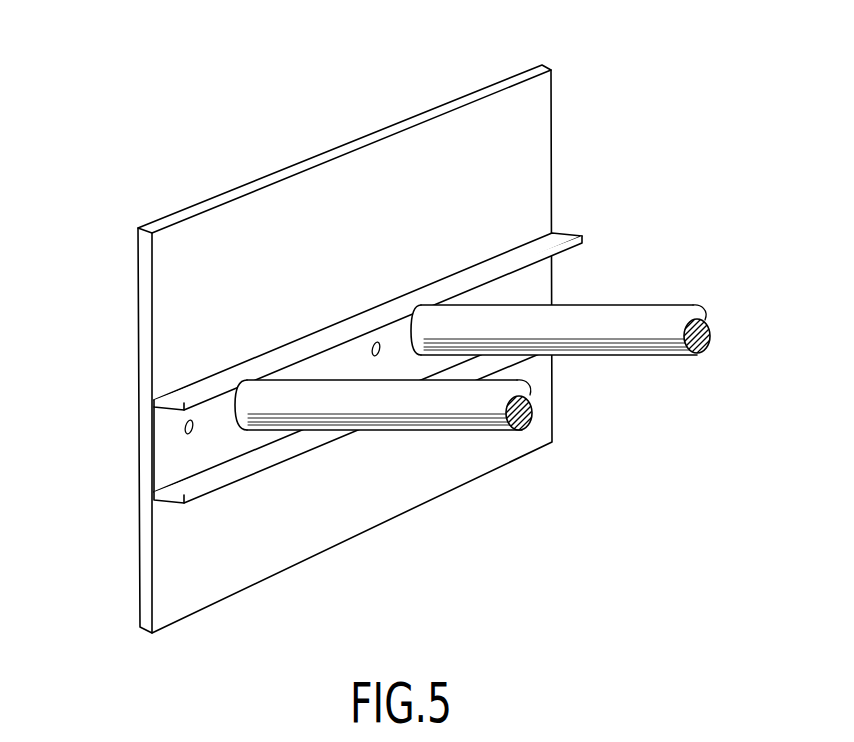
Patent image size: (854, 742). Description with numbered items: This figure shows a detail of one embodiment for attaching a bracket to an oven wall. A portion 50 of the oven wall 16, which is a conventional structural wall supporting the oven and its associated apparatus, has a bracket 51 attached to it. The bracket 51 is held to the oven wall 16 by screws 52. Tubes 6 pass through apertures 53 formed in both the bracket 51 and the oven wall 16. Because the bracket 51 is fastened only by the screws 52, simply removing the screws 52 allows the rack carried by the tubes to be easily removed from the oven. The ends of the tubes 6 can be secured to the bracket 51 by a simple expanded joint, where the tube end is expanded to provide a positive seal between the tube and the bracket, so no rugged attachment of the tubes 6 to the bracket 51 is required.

The oven wall 16 is at (338, 190).
The portion of oven wall 50 is at (368, 313).
The bracket 51 is at (223, 480).
The screws 52 is at (330, 355).
The apertures 53 is at (412, 330).
The tubes 6 is at (643, 357).